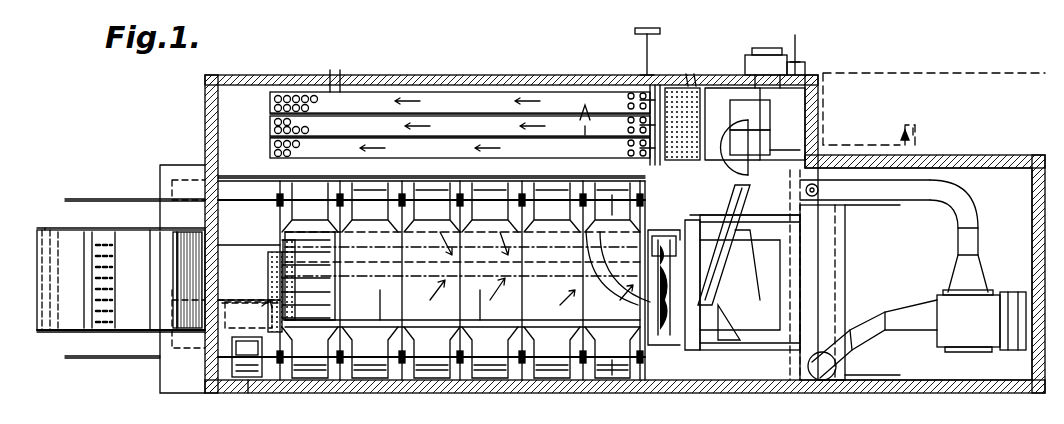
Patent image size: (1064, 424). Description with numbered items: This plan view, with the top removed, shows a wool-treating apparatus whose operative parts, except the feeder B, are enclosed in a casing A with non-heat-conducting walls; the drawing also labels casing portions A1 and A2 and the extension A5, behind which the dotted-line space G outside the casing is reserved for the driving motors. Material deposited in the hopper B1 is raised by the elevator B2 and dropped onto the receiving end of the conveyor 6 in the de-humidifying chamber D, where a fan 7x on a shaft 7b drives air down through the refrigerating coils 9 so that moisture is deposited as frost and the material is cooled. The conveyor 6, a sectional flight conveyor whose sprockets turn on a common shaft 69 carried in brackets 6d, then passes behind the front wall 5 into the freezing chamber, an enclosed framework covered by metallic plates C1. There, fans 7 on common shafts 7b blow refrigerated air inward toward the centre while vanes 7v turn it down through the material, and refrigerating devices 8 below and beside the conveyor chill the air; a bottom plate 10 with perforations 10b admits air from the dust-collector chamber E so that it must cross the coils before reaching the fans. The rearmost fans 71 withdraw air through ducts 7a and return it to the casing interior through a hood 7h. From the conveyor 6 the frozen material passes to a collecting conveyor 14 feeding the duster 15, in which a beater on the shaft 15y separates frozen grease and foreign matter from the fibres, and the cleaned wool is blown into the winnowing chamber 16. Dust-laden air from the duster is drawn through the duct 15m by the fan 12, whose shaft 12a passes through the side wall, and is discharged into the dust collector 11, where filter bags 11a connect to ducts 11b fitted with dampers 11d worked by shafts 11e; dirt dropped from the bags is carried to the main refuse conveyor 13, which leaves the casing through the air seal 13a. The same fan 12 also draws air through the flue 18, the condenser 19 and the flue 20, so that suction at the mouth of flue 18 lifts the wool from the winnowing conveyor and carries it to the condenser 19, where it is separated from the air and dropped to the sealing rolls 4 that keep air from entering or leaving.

The discharge sealing rolls 4 is at (746, 125).
The front wall 5 is at (266, 305).
The conveyor 6 is at (236, 245).
The brackets 6d is at (720, 335).
The shaft 69 is at (660, 215).
The fans 7 is at (535, 183).
The ducts 7a is at (615, 258).
The shafts 7b is at (405, 410).
The hood 7h is at (676, 287).
The vanes 7v is at (328, 262).
The fan 7x is at (254, 393).
The rearmost fans 71 is at (612, 195).
The air refrigerating devices 8 is at (430, 305).
The refrigerating coils 9 is at (190, 300).
The bottom plate 10 is at (268, 292).
The perforations 10b is at (268, 278).
The dust collector 11 is at (585, 92).
The filter bags 11a is at (305, 112).
The ducts 11b is at (362, 140).
The damper 11d is at (669, 133).
The shaft 11e is at (832, 145).
The fan 12 is at (708, 95).
The shaft 12a is at (820, 92).
The main refuse conveyor 13 is at (770, 158).
The air seal 13a is at (805, 62).
The collecting conveyor 14 is at (728, 236).
The duster 15 is at (735, 280).
The duct 15m is at (735, 272).
The beater shaft 15y is at (760, 55).
The winnowing chamber 16 is at (838, 250).
The flue 18 is at (870, 345).
The condenser 19 is at (975, 320).
The flue 20 is at (975, 210).
The casing A is at (562, 382).
The casing A1 is at (165, 160).
The exhaust compartment A2 is at (995, 150).
The extension A5 is at (460, 80).
The feeder B is at (130, 228).
The hopper B1 is at (60, 240).
The elevator B2 is at (100, 332).
The metallic plates C1 is at (518, 410).
The de-humidifying chamber D is at (232, 380).
The dust collector chamber E is at (250, 92).
The space G is at (935, 80).